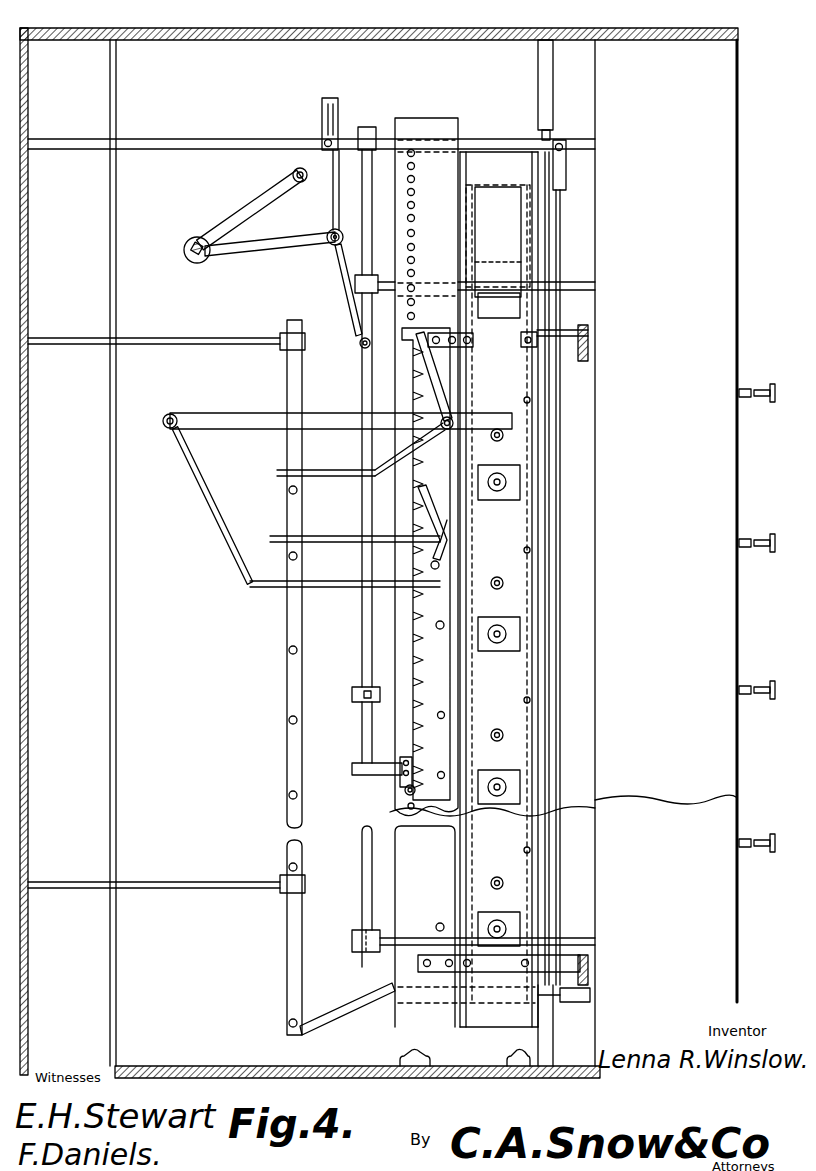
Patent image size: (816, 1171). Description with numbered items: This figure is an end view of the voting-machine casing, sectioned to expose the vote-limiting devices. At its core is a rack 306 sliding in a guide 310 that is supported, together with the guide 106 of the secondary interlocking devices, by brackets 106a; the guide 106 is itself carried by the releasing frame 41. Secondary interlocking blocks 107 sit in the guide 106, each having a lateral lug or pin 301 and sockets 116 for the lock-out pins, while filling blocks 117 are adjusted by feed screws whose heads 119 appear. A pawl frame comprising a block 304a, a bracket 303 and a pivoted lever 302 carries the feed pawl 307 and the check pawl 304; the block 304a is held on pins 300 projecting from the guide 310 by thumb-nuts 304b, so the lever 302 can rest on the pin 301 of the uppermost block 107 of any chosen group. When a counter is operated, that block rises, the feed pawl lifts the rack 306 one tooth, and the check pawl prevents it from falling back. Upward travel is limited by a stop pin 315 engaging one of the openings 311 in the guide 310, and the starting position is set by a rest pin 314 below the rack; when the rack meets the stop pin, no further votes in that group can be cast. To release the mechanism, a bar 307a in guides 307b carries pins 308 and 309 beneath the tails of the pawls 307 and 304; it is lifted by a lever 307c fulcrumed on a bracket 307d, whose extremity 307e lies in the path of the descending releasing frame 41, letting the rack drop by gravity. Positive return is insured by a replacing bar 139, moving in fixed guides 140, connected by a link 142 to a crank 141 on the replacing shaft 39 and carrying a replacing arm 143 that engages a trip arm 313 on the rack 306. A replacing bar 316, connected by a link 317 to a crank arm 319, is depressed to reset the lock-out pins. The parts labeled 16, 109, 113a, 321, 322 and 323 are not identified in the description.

The bolt 16 is at (768, 402).
The replacing shaft 39 is at (191, 239).
The releasing frame 41 is at (590, 356).
The guide 106 is at (478, 156).
The brackets 106a is at (575, 331).
The secondary interlocking blocks 107 is at (492, 857).
The ballot carrier 109 is at (508, 198).
The label 113a is at (500, 305).
The sockets 116 is at (532, 700).
The filling block 117 is at (516, 492).
The head 119 is at (522, 479).
The replacing bar 139 is at (374, 130).
The fixed guides 140 is at (596, 287).
The crank 141 is at (258, 196).
The link 142 is at (340, 263).
The replacing arm 143 is at (351, 694).
The pins 300 is at (412, 566).
The lug or pin 301 is at (506, 437).
The lever 302 is at (192, 413).
The bracket 303 is at (198, 482).
The check pawl 304 is at (333, 536).
The block 304a is at (407, 637).
The thumb-nut 304b is at (407, 594).
The rack 306 is at (410, 388).
The feed pawl 307 is at (333, 470).
The releasing bar 307a is at (287, 372).
The guides 307b is at (203, 340).
The lever 307c is at (356, 1006).
The bracket 307d is at (445, 1036).
The extremity 307e is at (592, 996).
The pins 308 is at (288, 490).
The pins 309 is at (288, 557).
The guide 310 is at (428, 118).
The seats or openings 311 is at (412, 222).
The trip arm 313 is at (350, 775).
The rest pin or stop 314 is at (402, 793).
The stop pin 315 is at (412, 292).
The replacing bar 316 is at (550, 230).
The link 317 is at (561, 260).
The crank arm 319 is at (567, 168).
The pin 321 is at (323, 104).
The block 322 is at (367, 126).
The link 323 is at (233, 254).